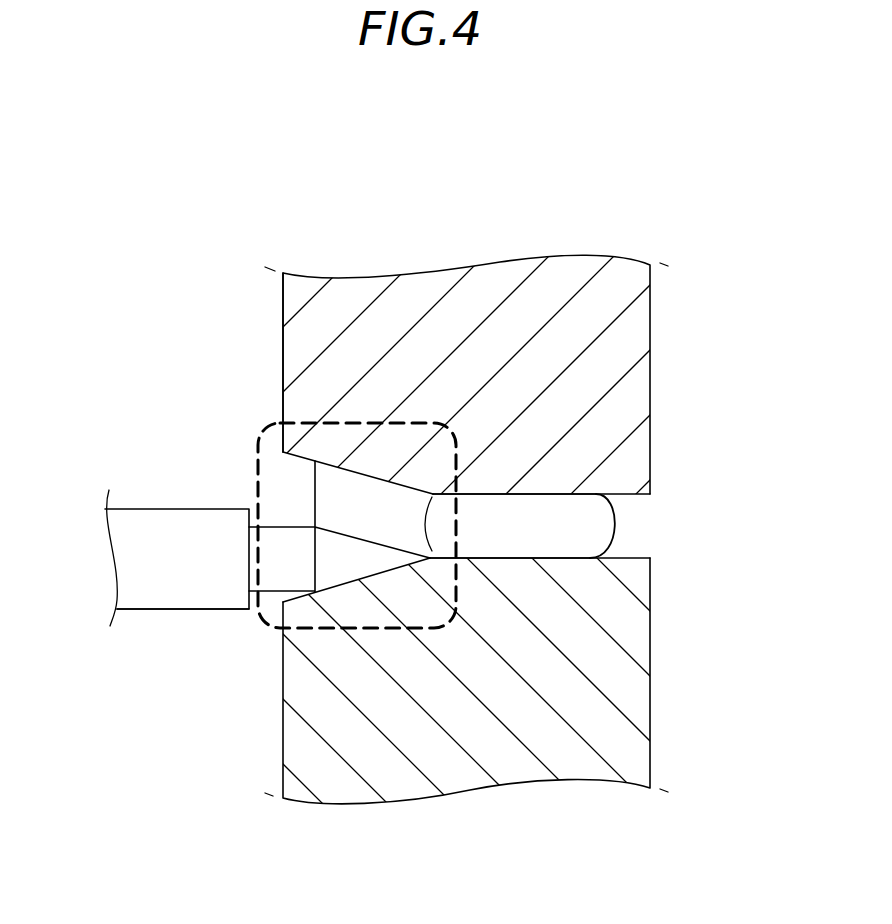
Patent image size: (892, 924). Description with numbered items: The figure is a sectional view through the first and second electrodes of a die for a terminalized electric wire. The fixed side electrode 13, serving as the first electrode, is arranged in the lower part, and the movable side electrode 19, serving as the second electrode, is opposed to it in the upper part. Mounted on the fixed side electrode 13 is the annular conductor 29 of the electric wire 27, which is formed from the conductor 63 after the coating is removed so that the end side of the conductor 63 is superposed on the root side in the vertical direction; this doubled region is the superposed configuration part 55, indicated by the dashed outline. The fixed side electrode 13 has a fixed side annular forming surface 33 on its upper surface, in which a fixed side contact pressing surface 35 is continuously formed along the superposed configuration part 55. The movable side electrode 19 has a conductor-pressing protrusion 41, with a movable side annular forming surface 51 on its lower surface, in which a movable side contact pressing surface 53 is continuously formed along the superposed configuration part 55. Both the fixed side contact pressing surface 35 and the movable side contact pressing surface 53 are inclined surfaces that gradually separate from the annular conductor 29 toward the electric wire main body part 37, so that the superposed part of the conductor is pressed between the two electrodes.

The fixed side electrode 13 is at (665, 728).
The movable side electrode 19 is at (665, 340).
The electric wire 27 is at (170, 502).
The annular conductor 29 is at (636, 516).
The fixed side annular forming surface 33 is at (548, 558).
The fixed side contact pressing surface 35 is at (378, 574).
The electric wire main body part 37 is at (170, 610).
The conductor-pressing protrusion 41 is at (283, 343).
The movable side annular forming surface 51 is at (550, 496).
The movable side contact pressing surface 53 is at (368, 476).
The superposed configuration part 55 is at (253, 452).
The conductor 63 is at (607, 531).